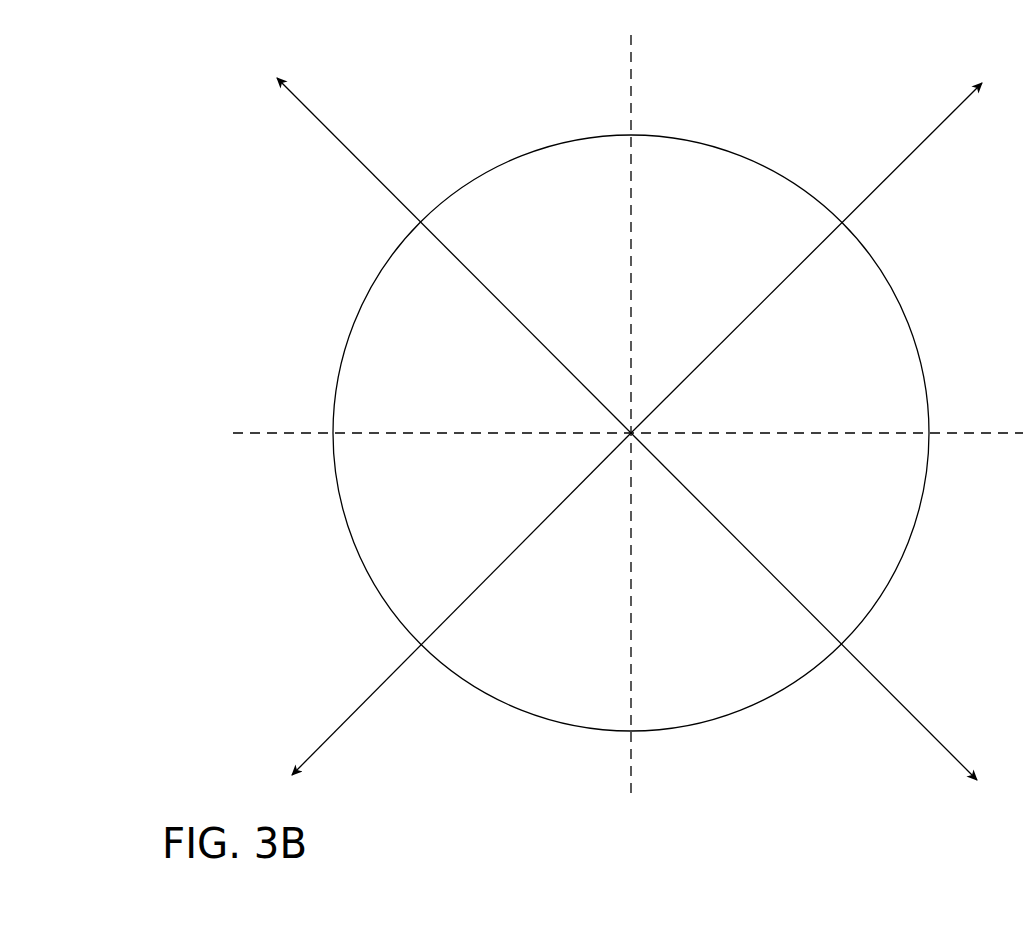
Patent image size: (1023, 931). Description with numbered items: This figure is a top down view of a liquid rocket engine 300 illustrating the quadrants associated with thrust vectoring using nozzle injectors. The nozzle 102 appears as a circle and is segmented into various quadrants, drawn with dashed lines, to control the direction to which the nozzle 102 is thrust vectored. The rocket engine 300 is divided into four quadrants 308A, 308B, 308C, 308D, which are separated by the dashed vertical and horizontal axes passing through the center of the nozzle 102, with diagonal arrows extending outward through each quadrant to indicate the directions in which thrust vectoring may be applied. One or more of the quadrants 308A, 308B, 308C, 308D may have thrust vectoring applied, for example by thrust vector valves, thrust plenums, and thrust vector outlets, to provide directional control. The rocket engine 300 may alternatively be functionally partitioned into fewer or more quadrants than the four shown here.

The rocket engine 300 is at (628, 413).
The nozzle 102 is at (664, 136).
The quadrant 308A is at (580, 287).
The quadrant 308B is at (576, 567).
The quadrant 308C is at (685, 567).
The quadrant 308D is at (679, 287).